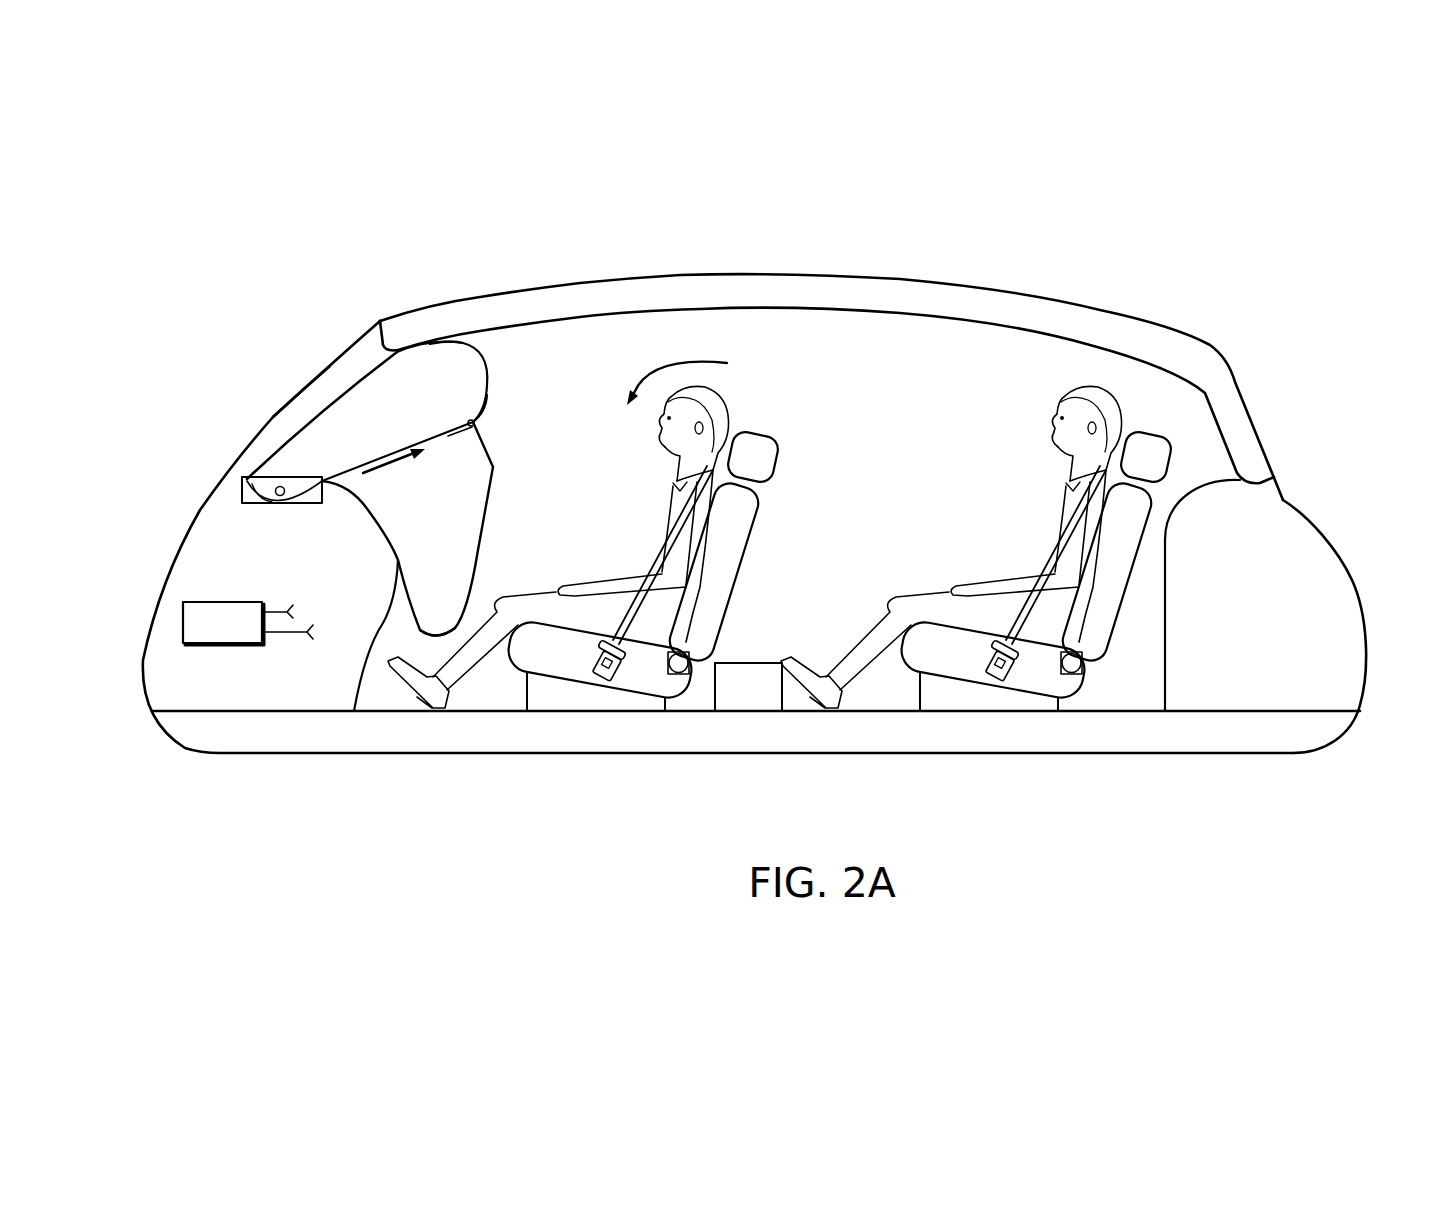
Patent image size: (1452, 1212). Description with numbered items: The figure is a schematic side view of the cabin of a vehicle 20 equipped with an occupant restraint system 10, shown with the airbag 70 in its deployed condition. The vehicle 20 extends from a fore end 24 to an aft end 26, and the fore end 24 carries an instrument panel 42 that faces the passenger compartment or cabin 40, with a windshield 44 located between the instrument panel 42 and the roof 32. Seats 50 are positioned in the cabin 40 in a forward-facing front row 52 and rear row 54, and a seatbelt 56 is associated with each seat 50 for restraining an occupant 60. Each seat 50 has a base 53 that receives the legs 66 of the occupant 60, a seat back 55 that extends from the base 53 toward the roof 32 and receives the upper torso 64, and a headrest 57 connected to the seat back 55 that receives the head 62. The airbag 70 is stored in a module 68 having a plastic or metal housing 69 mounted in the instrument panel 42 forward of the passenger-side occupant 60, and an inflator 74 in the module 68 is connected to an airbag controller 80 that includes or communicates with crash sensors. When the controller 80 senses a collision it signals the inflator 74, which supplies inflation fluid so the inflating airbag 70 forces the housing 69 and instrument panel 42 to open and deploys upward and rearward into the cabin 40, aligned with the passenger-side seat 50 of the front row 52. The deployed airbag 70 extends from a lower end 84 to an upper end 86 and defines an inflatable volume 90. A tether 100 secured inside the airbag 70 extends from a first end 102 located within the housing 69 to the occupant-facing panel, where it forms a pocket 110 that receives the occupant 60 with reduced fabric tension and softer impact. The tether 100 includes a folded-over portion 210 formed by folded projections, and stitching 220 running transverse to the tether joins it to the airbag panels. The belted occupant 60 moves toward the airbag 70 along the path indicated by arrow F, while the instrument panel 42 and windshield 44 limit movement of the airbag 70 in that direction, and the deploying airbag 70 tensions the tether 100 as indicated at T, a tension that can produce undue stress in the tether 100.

The occupant restraint system 10 is at (405, 769).
The vehicle 20 is at (1344, 635).
The fore end 24 is at (209, 445).
The aft end 26 is at (1318, 450).
The roof 32 is at (762, 283).
The cabin 40 is at (871, 475).
The instrument panel 42 is at (304, 566).
The windshield 44 is at (274, 418).
The seats 50 is at (593, 700).
The front row 52 is at (637, 730).
The base 53 is at (530, 630).
The rear row 54 is at (1033, 730).
The seat back 55 is at (733, 521).
The seatbelt 56 is at (642, 565).
The headrest 57 is at (759, 434).
The occupant 60 is at (779, 535).
The head 62 is at (720, 403).
The upper torso 64 is at (673, 537).
The legs 66 is at (517, 610).
The airbag module 68 is at (221, 501).
The housing 69 is at (258, 504).
The airbag 70 is at (512, 388).
The inflator 74 is at (242, 479).
The airbag controller 80 is at (225, 613).
The lower end 84 is at (441, 652).
The upper end 86 is at (496, 348).
The inflatable volume 90 is at (350, 396).
The tether 100 is at (443, 428).
The first end 102 is at (313, 464).
The pocket 110 is at (497, 423).
The folded-over portion 210 is at (460, 437).
The stitching 220 is at (470, 420).
The arrow F is at (677, 363).
The tension T is at (394, 481).